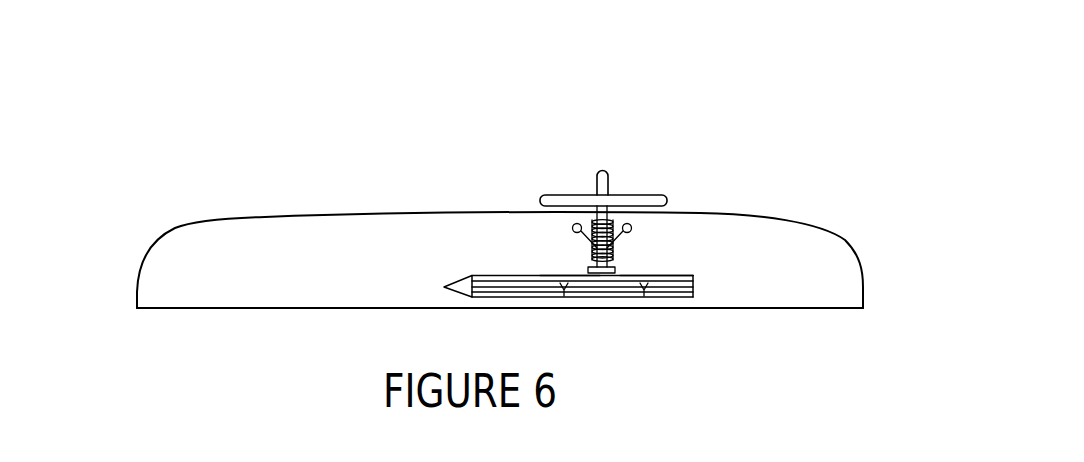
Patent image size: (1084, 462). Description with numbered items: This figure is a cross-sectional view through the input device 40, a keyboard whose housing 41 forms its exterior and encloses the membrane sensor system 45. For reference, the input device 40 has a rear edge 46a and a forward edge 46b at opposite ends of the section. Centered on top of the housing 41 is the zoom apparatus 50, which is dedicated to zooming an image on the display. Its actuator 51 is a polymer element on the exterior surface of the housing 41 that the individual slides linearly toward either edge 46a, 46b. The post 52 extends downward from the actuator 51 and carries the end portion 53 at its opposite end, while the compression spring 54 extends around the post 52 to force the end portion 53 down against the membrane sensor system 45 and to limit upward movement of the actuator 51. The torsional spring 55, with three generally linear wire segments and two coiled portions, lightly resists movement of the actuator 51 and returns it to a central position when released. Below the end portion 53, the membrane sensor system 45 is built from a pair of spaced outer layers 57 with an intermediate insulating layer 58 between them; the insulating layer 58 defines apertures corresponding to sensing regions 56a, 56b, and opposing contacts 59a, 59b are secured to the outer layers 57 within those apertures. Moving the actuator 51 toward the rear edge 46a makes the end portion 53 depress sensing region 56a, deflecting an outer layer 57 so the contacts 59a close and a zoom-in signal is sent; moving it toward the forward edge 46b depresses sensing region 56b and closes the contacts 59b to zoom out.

The input device 40 is at (178, 156).
The housing 41 is at (258, 217).
The membrane sensor system 45 is at (487, 276).
The rear edge 46a is at (863, 286).
The forward edge 46b is at (137, 286).
The zoom apparatus 50 is at (549, 124).
The actuator 51 is at (608, 182).
The post 52 is at (625, 245).
The end portion 53 is at (593, 253).
The compression spring 54 is at (622, 250).
The torsional spring 55 is at (618, 276).
The sensing region 56a is at (643, 275).
The sensing region 56b is at (557, 276).
The outer layers 57 is at (444, 287).
The intermediate insulating layer 58 is at (688, 297).
The contacts 59a is at (637, 282).
The contacts 59b is at (557, 282).